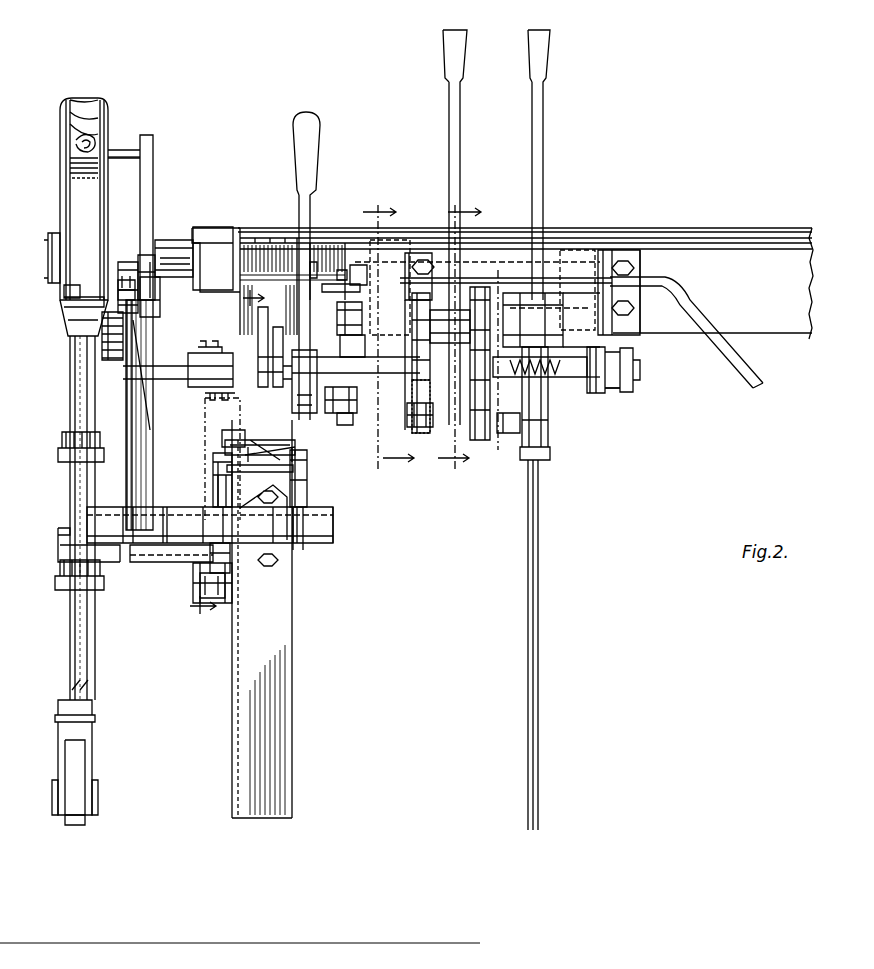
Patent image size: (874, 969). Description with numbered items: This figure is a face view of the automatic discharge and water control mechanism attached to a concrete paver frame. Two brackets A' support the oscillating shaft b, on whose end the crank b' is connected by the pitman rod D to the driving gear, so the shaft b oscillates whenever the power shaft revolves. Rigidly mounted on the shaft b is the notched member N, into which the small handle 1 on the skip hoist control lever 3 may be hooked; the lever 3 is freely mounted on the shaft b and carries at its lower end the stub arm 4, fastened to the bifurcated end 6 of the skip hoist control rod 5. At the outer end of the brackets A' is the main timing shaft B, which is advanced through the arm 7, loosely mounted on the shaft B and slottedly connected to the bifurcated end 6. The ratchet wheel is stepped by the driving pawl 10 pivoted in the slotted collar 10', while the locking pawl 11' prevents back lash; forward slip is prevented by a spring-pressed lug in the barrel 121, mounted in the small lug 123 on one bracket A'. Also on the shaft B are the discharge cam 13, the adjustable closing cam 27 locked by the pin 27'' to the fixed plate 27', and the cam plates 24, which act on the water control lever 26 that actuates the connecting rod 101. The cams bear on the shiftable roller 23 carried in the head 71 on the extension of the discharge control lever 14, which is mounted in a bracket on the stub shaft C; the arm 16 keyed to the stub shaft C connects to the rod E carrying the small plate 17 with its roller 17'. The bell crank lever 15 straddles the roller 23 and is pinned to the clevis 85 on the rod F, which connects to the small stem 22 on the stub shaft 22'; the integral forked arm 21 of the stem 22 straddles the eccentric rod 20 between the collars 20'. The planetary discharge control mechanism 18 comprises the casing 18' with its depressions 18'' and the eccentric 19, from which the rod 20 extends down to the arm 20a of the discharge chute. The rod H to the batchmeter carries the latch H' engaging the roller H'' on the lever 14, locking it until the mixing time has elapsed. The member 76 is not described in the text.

The small handle 1 is at (528, 235).
The brackets A' is at (506, 317).
The rod H is at (702, 332).
The eccentric 19 is at (80, 175).
The casing 18' is at (157, 324).
The planetary discharge control mechanism 18 is at (170, 220).
The depressions 18'' is at (167, 250).
The roller 17' is at (123, 277).
The small plate 17 is at (143, 318).
The rod E is at (125, 300).
The arm 16 is at (130, 404).
The rod 20 is at (98, 518).
The collars 20' is at (58, 520).
The forked arm 21 is at (118, 560).
The arm 20a is at (75, 797).
The discharge control lever 14 is at (300, 175).
The water control lever 26 is at (460, 154).
The skip hoist control lever 3 is at (543, 154).
The driving pawl 10 is at (388, 337).
The stub arm 4 is at (545, 345).
The arm 7 is at (495, 433).
The pin 27'' is at (187, 365).
The closing cam 27 is at (239, 347).
The plate 27' is at (279, 347).
The discharge cam 13 is at (305, 412).
The oscillating shaft b is at (489, 329).
The crank b' is at (347, 427).
The pitman rod D is at (357, 398).
The roller H'' is at (338, 265).
The latch H' is at (337, 295).
The slotted collar 10' is at (451, 341).
The locking pawl 11' is at (493, 322).
The notched member N is at (530, 302).
The cam plates 24 is at (413, 430).
The connecting rod 101 is at (425, 427).
The main timing shaft B is at (640, 374).
The barrel 121 is at (575, 388).
The small lug 123 is at (615, 392).
The bifurcated end 6 is at (545, 408).
The skip hoist control rod 5 is at (540, 500).
The stub shaft C is at (333, 527).
The bell crank lever 15 is at (248, 608).
The clevis 85 is at (213, 472).
The rod F is at (216, 493).
The link 76 is at (307, 480).
The head 71 is at (245, 434).
The shiftable roller 23 is at (300, 450).
The stub shaft 22' is at (177, 567).
The small stem 22 is at (236, 600).